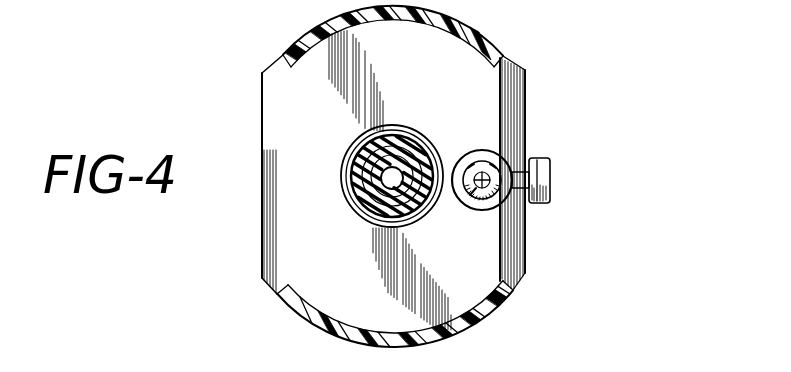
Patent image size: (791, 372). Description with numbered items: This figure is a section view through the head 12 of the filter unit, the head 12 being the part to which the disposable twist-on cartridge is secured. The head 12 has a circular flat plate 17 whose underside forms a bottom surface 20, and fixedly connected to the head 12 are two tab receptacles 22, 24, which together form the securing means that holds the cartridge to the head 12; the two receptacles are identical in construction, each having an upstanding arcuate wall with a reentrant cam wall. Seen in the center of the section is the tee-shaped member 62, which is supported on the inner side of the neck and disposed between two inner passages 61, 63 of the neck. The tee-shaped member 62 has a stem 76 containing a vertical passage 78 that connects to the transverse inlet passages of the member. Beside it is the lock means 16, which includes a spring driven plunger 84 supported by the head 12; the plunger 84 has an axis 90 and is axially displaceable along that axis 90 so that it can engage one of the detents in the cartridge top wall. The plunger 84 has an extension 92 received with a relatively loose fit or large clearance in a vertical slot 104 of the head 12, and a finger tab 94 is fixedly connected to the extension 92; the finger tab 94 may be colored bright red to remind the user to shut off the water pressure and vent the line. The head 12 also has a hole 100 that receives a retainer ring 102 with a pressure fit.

The head 12 is at (263, 251).
The lock means 16 is at (563, 175).
The circular flat plate 17 is at (262, 72).
The bottom surface 20 is at (283, 88).
The tab receptacle 22 is at (499, 42).
The tab receptacle 24 is at (482, 318).
The inner passage 61 is at (408, 146).
The tee-shaped member 62 is at (352, 146).
The inner passage 63 is at (363, 218).
The stem 76 is at (345, 185).
The vertical passage 78 is at (424, 146).
The spring driven plunger 84 is at (518, 168).
The axis 90 is at (477, 211).
The extension 92 is at (531, 158).
The finger tab 94 is at (549, 184).
The hole 100 is at (471, 163).
The retainer ring 102 is at (490, 207).
The vertical slot 104 is at (524, 181).